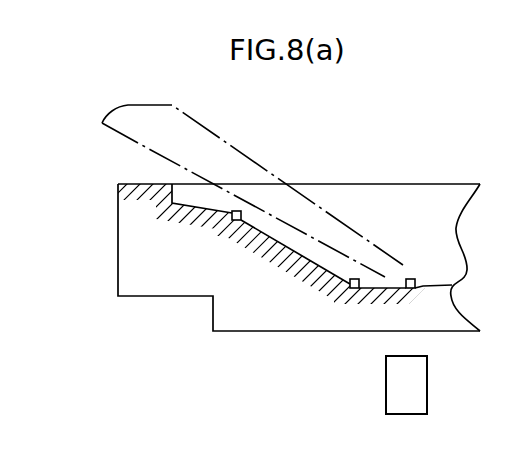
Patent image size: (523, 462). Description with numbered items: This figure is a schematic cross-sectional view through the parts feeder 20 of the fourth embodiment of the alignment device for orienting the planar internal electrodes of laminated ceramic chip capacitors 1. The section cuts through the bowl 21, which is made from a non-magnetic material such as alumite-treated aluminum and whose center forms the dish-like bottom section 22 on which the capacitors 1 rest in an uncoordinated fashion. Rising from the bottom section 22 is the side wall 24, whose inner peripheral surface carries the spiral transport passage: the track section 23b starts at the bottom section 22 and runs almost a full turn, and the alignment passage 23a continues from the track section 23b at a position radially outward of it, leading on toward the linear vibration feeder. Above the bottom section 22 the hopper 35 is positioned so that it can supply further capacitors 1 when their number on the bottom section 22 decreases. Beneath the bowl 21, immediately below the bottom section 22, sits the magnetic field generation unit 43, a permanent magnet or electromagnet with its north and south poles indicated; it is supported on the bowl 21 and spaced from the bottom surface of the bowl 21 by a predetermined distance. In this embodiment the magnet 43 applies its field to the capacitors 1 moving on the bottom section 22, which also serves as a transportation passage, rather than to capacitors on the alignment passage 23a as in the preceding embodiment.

The laminated ceramic chip capacitor 1 is at (237, 211).
The parts feeder 20 is at (352, 174).
The bowl 21 is at (147, 297).
The bottom section 22 is at (390, 290).
The alignment passage 23a is at (234, 221).
The track section 23b is at (353, 290).
The side wall 24 is at (145, 202).
The hopper 35 is at (212, 132).
The magnetic field generation unit 43 is at (422, 373).